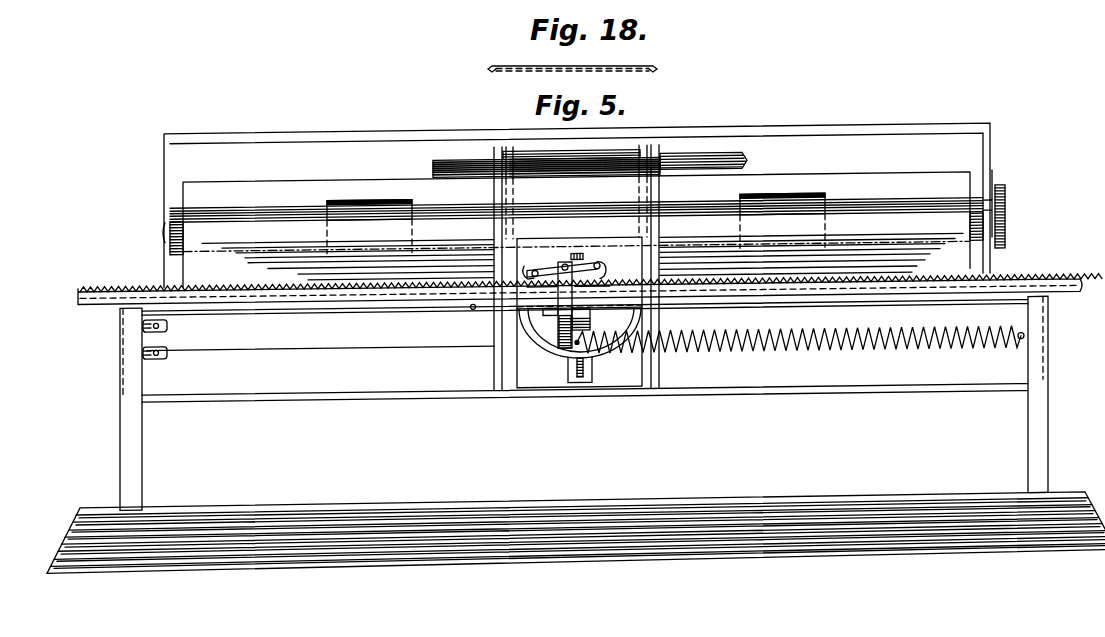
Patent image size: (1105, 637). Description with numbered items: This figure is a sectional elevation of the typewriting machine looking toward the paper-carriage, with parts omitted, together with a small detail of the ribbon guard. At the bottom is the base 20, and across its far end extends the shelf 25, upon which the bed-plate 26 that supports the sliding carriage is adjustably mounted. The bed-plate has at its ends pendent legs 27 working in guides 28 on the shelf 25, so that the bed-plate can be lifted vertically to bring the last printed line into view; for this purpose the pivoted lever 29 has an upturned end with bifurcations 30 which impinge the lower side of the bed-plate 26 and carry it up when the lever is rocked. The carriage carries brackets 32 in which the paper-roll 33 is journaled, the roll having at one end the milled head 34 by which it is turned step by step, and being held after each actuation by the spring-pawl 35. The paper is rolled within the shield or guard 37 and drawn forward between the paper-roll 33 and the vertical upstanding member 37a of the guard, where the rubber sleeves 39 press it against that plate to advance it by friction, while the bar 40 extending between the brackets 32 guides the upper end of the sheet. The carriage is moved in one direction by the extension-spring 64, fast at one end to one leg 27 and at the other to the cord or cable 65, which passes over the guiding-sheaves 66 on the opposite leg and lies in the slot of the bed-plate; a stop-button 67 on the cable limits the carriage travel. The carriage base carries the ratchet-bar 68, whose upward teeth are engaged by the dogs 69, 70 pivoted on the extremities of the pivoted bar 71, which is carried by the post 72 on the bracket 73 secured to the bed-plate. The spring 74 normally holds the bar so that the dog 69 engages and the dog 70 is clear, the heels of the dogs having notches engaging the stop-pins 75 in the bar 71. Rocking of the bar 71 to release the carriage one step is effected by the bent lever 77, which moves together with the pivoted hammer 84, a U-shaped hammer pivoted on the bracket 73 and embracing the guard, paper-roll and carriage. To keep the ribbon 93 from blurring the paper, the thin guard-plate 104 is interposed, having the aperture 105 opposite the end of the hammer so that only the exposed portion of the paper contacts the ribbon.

In FIG. 5, the base 20 is at (576, 532).
In FIG. 5, the shelf 25 is at (462, 393).
In FIG. 5, the bed-plate 26 is at (783, 298).
In FIG. 5, the pendent legs 27 is at (120, 312).
In FIG. 5, the guides 28 is at (120, 352).
In FIG. 5, the pivoted lever 29 is at (580, 391).
In FIG. 5, the bifurcations 30 is at (553, 358).
In FIG. 5, the brackets 32 is at (164, 183).
In FIG. 5, the paper-roll 33 is at (462, 210).
In FIG. 5, the milled head 34 is at (1005, 232).
In FIG. 5, the spring-pawl 35 is at (1005, 182).
In FIG. 5, the shield or guard 37 is at (793, 181).
In FIG. 5, the vertical upstanding member 37a is at (440, 256).
In FIG. 5, the rubber sleeves 39 is at (576, 215).
In FIG. 5, the bar 40 is at (718, 136).
In FIG. 5, the extension-spring 64 is at (900, 345).
In FIG. 5, the cord or cable 65 is at (360, 350).
In FIG. 5, the guiding-sheaves 66 is at (174, 348).
In FIG. 5, the stop-button 67 is at (469, 311).
In FIG. 5, the ratchet-bar 68 is at (675, 284).
In FIG. 5, the dog 69 is at (527, 265).
In FIG. 5, the dog 70 is at (605, 262).
In FIG. 5, the pivoted bar 71 is at (560, 268).
In FIG. 5, the post 72 is at (542, 293).
In FIG. 5, the bracket 73 is at (559, 327).
In FIG. 5, the spring 74 is at (597, 293).
In FIG. 5, the stop-pins 75 is at (576, 261).
In FIG. 5, the bent lever 77 is at (598, 265).
In FIG. 5, the pivoted hammer 84 is at (590, 321).
In FIG. 18, the ribbon 93 is at (556, 68).
In FIG. 5, the ribbon 93 is at (690, 162).
In FIG. 18, the guard-plate 104 is at (583, 64).
In FIG. 5, the guard-plate 104 is at (527, 150).
In FIG. 5, the aperture 105 is at (586, 157).